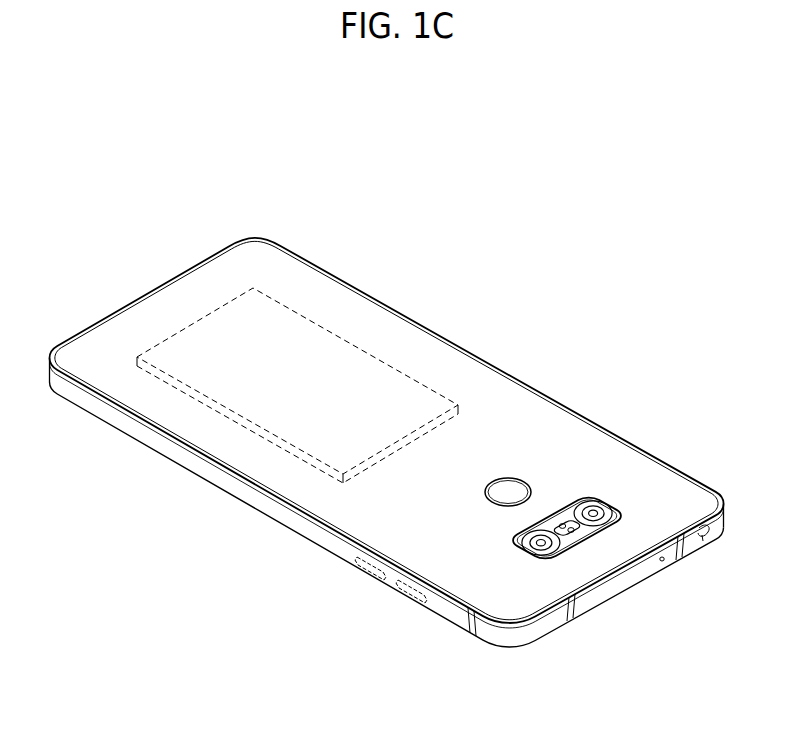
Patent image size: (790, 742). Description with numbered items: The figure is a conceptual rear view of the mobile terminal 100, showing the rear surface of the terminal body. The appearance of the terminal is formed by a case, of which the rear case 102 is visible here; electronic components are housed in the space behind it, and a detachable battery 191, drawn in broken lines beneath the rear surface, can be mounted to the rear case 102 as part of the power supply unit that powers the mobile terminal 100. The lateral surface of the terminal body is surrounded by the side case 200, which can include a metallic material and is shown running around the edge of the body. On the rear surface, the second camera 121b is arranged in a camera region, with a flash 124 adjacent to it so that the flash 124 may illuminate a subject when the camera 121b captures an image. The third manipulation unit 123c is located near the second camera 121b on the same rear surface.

The mobile terminal 100 is at (87, 170).
The rear case 102 is at (413, 327).
The side case 200 is at (268, 507).
The battery 191 is at (178, 338).
The third manipulation unit 123c is at (518, 483).
The second camera 121b is at (607, 507).
The flash 124 is at (579, 531).